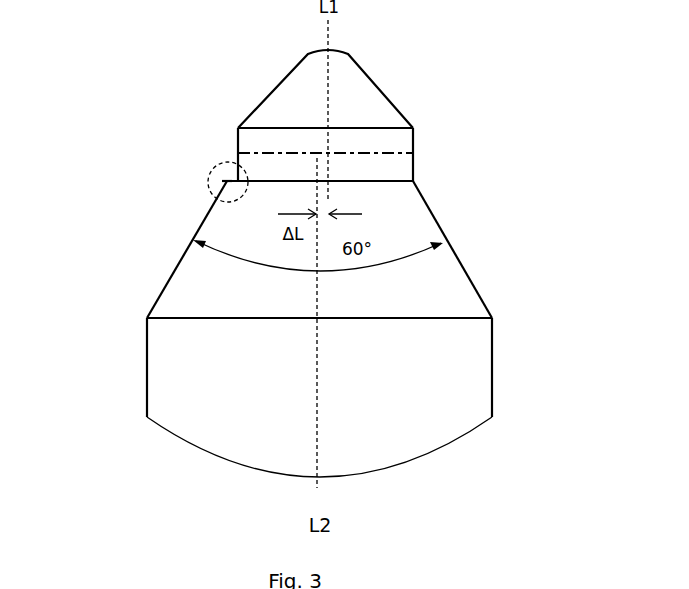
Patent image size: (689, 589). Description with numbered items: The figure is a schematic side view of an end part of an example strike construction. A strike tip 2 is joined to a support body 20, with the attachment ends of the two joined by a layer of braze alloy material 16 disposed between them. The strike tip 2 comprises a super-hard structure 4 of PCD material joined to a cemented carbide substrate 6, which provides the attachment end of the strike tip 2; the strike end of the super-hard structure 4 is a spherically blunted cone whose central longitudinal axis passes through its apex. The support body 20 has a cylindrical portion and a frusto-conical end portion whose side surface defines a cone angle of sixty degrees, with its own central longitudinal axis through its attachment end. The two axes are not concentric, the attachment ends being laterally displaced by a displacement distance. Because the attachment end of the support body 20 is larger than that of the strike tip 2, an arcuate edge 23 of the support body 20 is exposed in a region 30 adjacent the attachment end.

The strike tip 2 is at (320, 70).
The super-hard structure 4 is at (275, 110).
The cemented carbide substrate 6 is at (278, 172).
The braze alloy material 16 is at (420, 181).
The support body 20 is at (170, 307).
The edge 23 is at (227, 182).
The region 30 is at (217, 163).